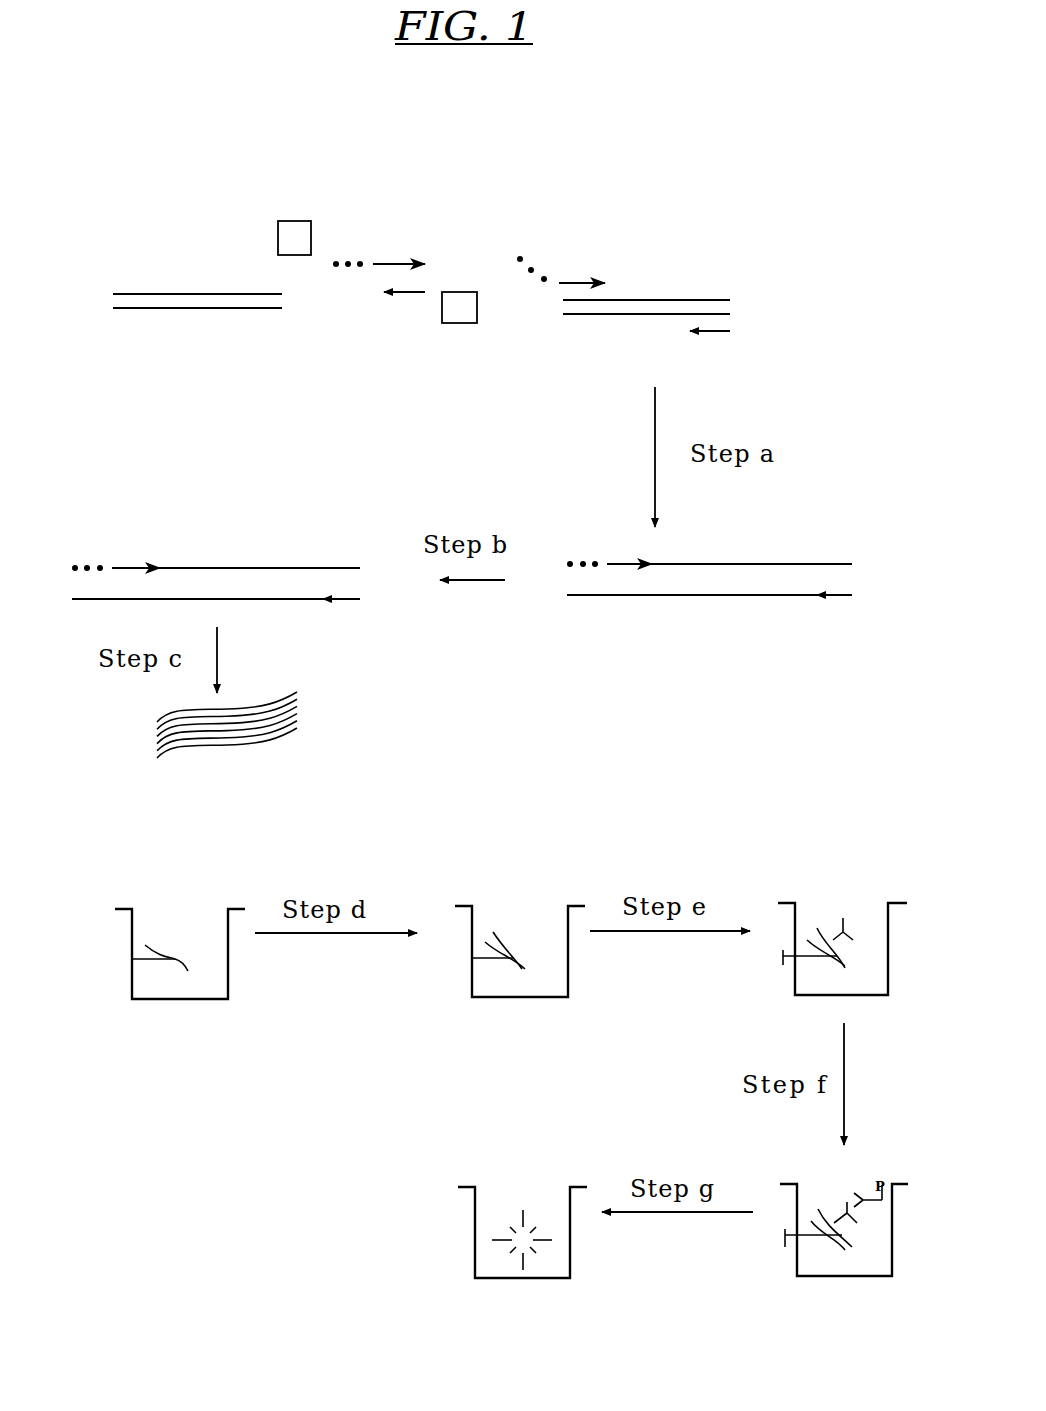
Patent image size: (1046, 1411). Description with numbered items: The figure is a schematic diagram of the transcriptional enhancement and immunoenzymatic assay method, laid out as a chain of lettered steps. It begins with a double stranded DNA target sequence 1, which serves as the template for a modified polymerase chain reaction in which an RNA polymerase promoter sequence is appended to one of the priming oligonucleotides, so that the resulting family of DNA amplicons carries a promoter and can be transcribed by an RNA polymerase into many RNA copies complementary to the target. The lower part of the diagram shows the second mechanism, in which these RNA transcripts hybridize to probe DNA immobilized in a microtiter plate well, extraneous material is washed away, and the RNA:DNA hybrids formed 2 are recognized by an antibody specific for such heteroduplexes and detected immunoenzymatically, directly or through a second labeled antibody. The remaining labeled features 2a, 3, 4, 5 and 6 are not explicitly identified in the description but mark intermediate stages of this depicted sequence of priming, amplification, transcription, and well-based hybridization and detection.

The double stranded DNA target sequence 1 is at (217, 318).
The labeled first primer 2a is at (347, 249).
The RNA:DNA hybrids formed 2 is at (407, 326).
The primer-annealed template complex 3 is at (662, 284).
The extended amplification product 4 is at (660, 601).
The amplified product strands 5 is at (216, 761).
The well with immobilized amplified product 6 is at (190, 986).